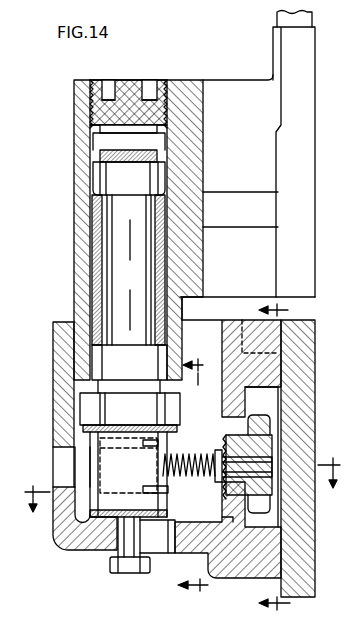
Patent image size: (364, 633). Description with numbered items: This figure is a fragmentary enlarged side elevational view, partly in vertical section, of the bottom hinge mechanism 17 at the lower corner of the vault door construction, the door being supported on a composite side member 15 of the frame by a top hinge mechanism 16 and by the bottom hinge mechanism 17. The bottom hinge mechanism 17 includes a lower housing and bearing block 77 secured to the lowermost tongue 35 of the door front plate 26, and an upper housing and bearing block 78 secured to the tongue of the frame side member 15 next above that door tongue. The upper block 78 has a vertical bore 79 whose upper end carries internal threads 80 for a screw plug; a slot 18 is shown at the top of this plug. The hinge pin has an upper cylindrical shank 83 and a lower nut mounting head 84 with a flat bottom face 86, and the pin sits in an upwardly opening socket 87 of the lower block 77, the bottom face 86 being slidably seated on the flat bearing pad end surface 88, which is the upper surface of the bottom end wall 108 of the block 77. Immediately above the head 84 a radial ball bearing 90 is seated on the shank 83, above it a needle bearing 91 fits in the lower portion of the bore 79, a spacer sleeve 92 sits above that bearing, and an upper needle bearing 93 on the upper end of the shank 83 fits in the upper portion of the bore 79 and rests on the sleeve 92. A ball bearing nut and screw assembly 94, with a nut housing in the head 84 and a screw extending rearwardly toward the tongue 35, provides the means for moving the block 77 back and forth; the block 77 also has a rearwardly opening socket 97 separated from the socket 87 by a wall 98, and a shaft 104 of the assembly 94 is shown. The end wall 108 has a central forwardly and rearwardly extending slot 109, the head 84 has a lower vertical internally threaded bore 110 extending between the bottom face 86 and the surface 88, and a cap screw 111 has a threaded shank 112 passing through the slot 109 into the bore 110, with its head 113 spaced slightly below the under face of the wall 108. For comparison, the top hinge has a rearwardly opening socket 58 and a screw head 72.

The composite side member 15 is at (185, 485).
The top hinge mechanism 16 is at (195, 476).
The bottom hinge mechanism 17 is at (70, 317).
The cap screw slots 18 is at (125, 80).
The front plate 26 is at (307, 308).
The tongue 35 is at (314, 550).
The rearwardly opening socket 58 is at (271, 154).
The head 72 is at (354, 155).
The lower housing and bearing block 77 is at (64, 550).
The upper housing and bearing block 78 is at (80, 178).
The vertical bore 79 is at (103, 143).
The internal threads 80 is at (88, 108).
The upper cylindrical shank 83 is at (145, 276).
The lower nut mounting head 84 is at (103, 500).
The bottom face 86 is at (147, 513).
The upwardly opening socket 87 is at (85, 440).
The bearing pad end surface 88 is at (173, 520).
The radial ball bearing 90 is at (95, 405).
The needle bearing 91 is at (110, 357).
The spacer sleeve 92 is at (163, 243).
The needle bearing 93 is at (156, 177).
The ball bearing nut and screw assembly 94 is at (197, 452).
The rearwardly opening socket 97 is at (278, 512).
The wall 98 is at (250, 417).
The gear shaft 104 is at (268, 437).
The bottom end wall 108 is at (186, 532).
The slot 109 is at (167, 541).
The internally threaded bore 110 is at (118, 503).
The cap screw 111 is at (92, 551).
The threaded shank 112 is at (127, 523).
The head 113 is at (120, 574).